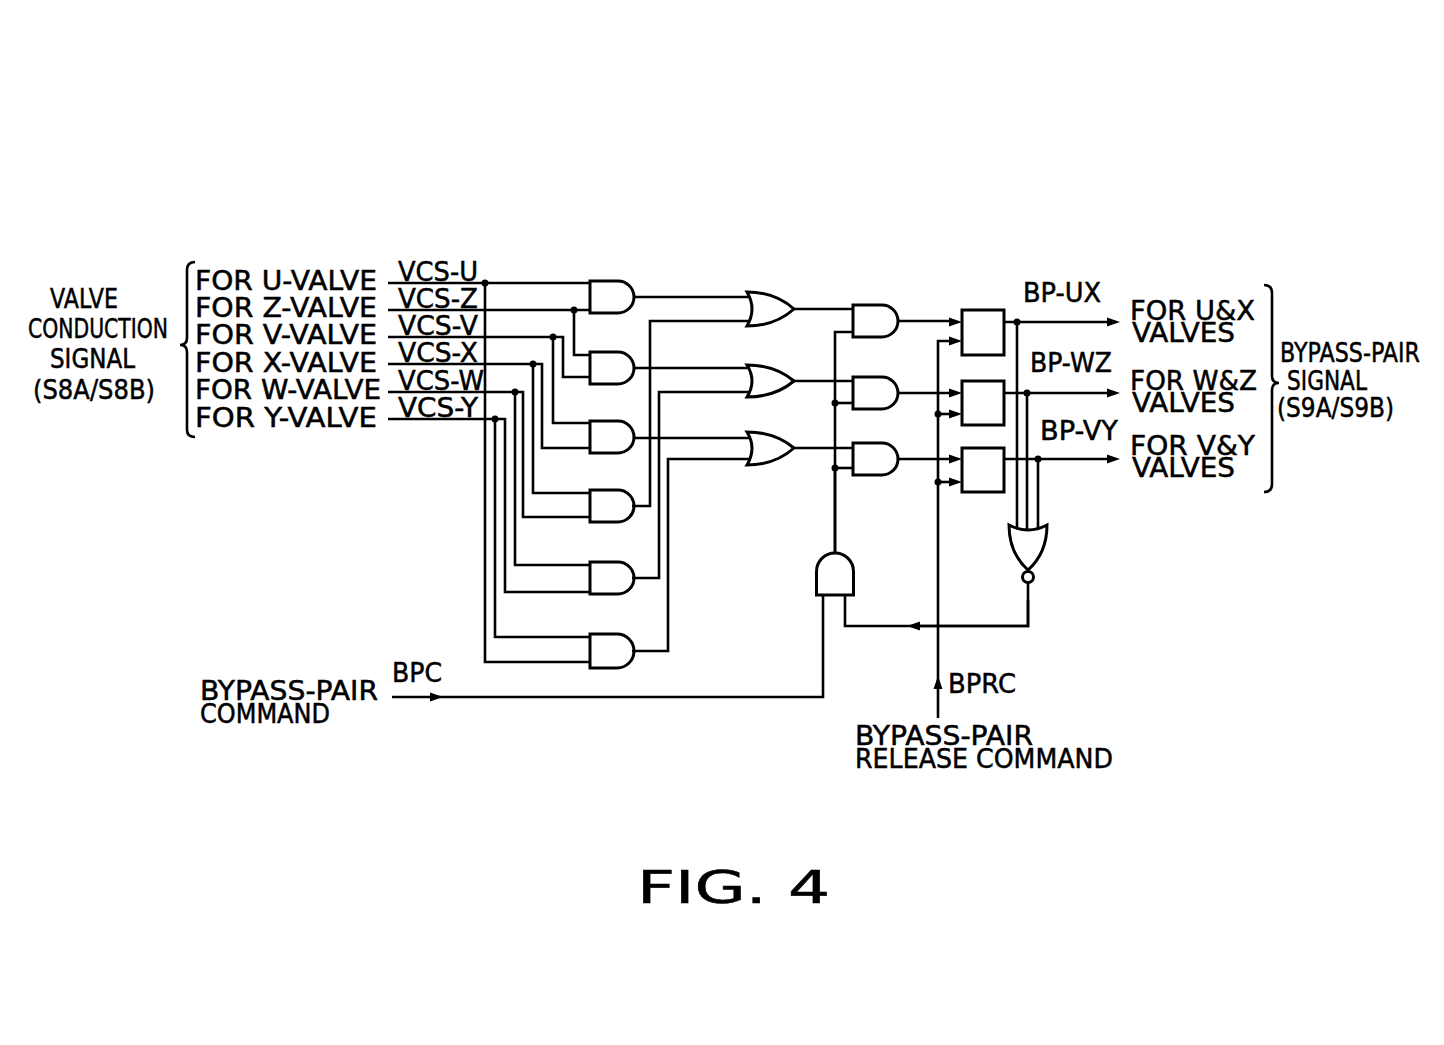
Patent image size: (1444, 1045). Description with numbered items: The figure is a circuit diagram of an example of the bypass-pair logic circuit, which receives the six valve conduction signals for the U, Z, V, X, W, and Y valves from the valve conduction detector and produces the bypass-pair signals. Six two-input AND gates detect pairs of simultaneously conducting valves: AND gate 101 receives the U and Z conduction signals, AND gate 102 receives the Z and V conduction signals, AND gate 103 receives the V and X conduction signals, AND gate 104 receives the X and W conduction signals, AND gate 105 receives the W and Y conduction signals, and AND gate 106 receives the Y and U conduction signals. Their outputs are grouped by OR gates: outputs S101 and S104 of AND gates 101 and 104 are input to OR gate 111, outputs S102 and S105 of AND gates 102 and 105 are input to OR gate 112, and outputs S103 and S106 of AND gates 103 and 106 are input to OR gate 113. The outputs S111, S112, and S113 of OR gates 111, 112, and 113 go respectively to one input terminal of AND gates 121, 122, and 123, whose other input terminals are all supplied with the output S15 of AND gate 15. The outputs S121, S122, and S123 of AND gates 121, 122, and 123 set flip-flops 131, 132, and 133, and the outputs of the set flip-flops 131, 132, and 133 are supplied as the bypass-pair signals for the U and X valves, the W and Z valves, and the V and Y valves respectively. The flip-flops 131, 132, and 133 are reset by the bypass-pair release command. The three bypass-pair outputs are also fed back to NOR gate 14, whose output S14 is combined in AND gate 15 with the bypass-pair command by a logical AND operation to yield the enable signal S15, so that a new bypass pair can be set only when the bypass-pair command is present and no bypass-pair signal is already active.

The AND gate 101 is at (604, 281).
The AND gate 102 is at (619, 352).
The AND gate 103 is at (610, 421).
The AND gate 104 is at (607, 491).
The AND gate 105 is at (607, 564).
The AND gate 106 is at (607, 636).
The OR gate 111 is at (757, 292).
The OR gate 112 is at (782, 374).
The OR gate 113 is at (779, 438).
The AND gate 121 is at (868, 304).
The AND gate 122 is at (875, 380).
The AND gate 123 is at (874, 447).
The flip-flop 131 is at (978, 309).
The flip-flop 132 is at (984, 389).
The flip-flop 133 is at (975, 494).
The NOR gate 14 is at (1048, 534).
The AND gate 15 is at (854, 577).
The output of AND gate 101 S101 is at (682, 297).
The output of AND gate 102 S102 is at (676, 349).
The output of AND gate 103 S103 is at (736, 459).
The output of AND gate 104 S104 is at (662, 314).
The output of AND gate 105 S105 is at (695, 393).
The output of AND gate 106 S106 is at (693, 458).
The output of OR gate 111 S111 is at (818, 308).
The output of OR gate 112 S112 is at (811, 365).
The output of OR gate 113 S113 is at (812, 452).
The output of AND gate 121 S121 is at (914, 320).
The output of AND gate 122 S122 is at (912, 383).
The output of AND gate 123 S123 is at (912, 469).
The output of NOR gate 14 S14 is at (974, 625).
The output of AND gate 15 S15 is at (836, 527).